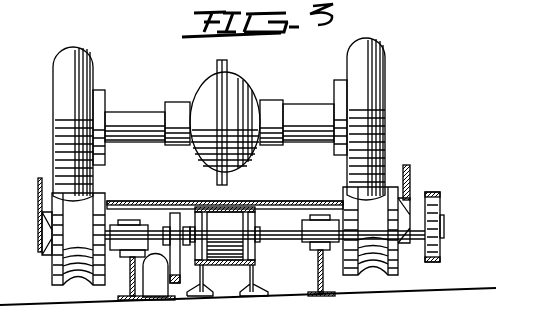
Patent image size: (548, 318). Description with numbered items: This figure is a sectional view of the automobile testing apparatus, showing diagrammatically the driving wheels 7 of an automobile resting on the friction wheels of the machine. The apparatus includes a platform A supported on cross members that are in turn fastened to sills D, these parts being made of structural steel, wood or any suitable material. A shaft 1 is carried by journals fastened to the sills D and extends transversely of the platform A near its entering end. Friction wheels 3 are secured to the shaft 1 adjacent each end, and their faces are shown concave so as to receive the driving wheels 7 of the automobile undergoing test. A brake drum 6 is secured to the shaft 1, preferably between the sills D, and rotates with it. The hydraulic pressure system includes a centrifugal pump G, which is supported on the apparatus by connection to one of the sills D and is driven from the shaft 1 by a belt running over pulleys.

The vehicle wheel 7 is at (364, 74).
The platform A is at (162, 200).
The friction wheel 3 is at (397, 200).
The shaft 1 is at (276, 233).
The brake drum 6 is at (221, 252).
The centrifugal pump G is at (155, 275).
The sill D is at (333, 282).